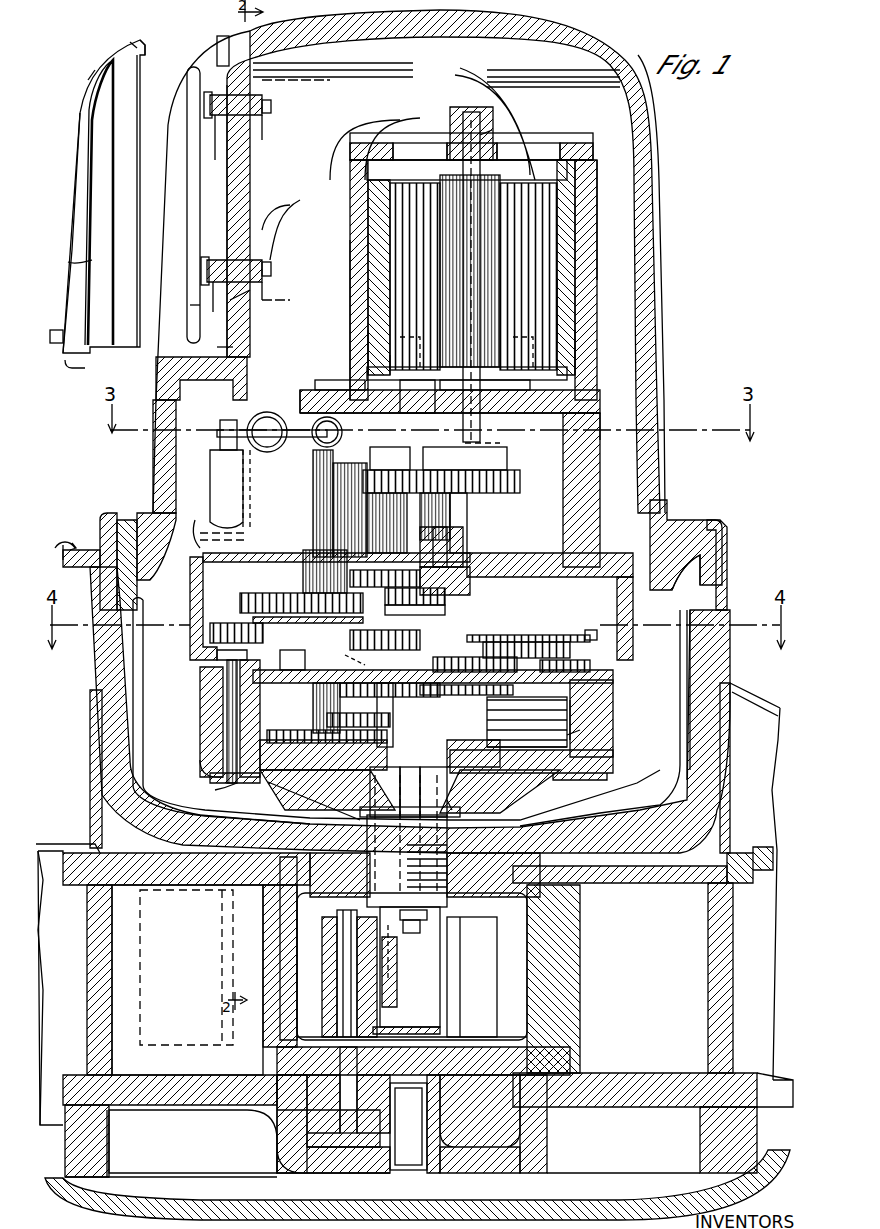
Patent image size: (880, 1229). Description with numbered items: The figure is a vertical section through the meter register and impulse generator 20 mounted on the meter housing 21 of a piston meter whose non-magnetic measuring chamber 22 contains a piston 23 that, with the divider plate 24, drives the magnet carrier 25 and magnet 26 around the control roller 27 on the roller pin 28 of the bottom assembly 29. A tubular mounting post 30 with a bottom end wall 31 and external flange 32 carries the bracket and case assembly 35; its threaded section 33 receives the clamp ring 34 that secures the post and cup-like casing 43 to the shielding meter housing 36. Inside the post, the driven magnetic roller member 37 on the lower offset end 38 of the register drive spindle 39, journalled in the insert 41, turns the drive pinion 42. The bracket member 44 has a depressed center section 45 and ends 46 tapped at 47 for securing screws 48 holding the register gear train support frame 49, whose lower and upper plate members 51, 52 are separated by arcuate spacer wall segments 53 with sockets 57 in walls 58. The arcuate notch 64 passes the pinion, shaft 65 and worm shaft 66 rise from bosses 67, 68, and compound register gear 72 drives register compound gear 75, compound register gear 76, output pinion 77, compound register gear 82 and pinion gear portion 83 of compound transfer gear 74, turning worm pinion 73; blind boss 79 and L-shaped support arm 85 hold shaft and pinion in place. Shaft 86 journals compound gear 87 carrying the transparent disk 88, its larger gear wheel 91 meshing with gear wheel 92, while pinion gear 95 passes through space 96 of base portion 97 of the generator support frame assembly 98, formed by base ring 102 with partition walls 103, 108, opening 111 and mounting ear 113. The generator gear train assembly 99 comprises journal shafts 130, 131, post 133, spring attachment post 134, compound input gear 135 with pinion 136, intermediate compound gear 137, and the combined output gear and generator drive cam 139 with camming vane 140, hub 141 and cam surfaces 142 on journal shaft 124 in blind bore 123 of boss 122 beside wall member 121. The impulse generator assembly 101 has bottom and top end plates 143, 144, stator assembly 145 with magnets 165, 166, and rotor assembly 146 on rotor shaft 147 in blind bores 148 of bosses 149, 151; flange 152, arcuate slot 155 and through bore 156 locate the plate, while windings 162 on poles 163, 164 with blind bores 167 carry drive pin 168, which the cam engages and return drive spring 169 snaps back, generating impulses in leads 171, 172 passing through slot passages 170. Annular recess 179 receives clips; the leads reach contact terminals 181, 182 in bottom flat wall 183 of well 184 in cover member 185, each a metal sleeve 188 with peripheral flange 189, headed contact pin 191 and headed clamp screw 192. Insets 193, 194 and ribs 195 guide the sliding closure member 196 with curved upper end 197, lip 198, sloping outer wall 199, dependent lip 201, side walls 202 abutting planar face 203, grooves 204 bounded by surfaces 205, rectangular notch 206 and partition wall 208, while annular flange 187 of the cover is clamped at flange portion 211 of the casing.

The meter register and impulse generator 20 is at (662, 264).
The meter housing 21 is at (67, 552).
The measuring chamber 22 is at (725, 979).
The piston 23 is at (580, 1024).
The divider plate 24 is at (187, 980).
The magnet carrier 25 is at (482, 974).
The magnet 26 is at (330, 1002).
The control roller 27 is at (300, 1113).
The roller pin 28 is at (405, 1170).
The bottom assembly 29 is at (520, 1169).
The mounting post 30 is at (440, 1030).
The bottom end wall 31 is at (435, 1037).
The external flange 32 is at (520, 809).
The threaded section 33 is at (375, 905).
The clamp ring 34 is at (578, 909).
The bracket and case assembly 35 is at (610, 794).
The meter housing 36 is at (735, 699).
The driven magnetic roller member 37 is at (395, 989).
The lower offset end 38 is at (393, 1009).
The register drive spindle 39 is at (407, 935).
The insert 41 is at (410, 921).
The drive pinion 42 is at (440, 780).
The cup-like casing 43 is at (700, 672).
The bracket member 44 is at (310, 816).
The depressed center section 45 is at (340, 805).
The ends 46 is at (210, 782).
The tapped apertures 47 is at (211, 793).
The securing screws 48 is at (223, 719).
The register gear train support frame 49 is at (613, 724).
The lower plate member 51 is at (205, 764).
The upper plate member 52 is at (205, 664).
The arcuate spacer wall segments 53 is at (205, 694).
The slot-like sockets 57 is at (378, 799).
The opposing walls 58 is at (463, 800).
The arcuate notch 64 is at (372, 789).
The shaft 65 is at (327, 790).
The worm shaft 66 is at (525, 782).
The hollow boss 67 is at (375, 719).
The hollow boss 68 is at (435, 704).
The compound register gear 72 is at (283, 732).
The register output worm pinion 73 is at (580, 734).
The compound transfer gear 74 is at (586, 629).
The register compound gear 75 is at (330, 684).
The compound register gear 76 is at (455, 699).
The output pinion 77 is at (455, 659).
The dependent blind boss 79 is at (320, 692).
The compound register gear 82 is at (572, 664).
The pinion gear portion 83 is at (530, 639).
The L-shaped support arm 85 is at (495, 719).
The shaft 86 is at (350, 655).
The compound gear 87 is at (475, 636).
The transparent disk 88 is at (282, 632).
The larger gear wheel 91 is at (352, 642).
The larger gear wheel 92 is at (575, 638).
The pinion gear 95 is at (420, 603).
The space 96 is at (425, 622).
The base portion 97 is at (212, 531).
The generator support frame assembly 98 is at (585, 509).
The generator gear train assembly 99 is at (280, 544).
The impulse generator assembly 101 is at (350, 294).
The base ring 102 is at (190, 594).
The partition wall 103 is at (272, 612).
The partition wall 108 is at (548, 559).
The through opening 111 is at (190, 610).
The mounting ear 113 is at (200, 634).
The semi-cylindrical wall member 121 is at (588, 436).
The cylindrical boss 122 is at (470, 564).
The blind bore 123 is at (463, 542).
The journal shaft 124 is at (485, 386).
The journal shaft 130 is at (320, 399).
The journal shaft 131 is at (313, 484).
The rectangular post 133 is at (222, 487).
The spring attachment post 134 is at (230, 422).
The compound input gear 135 is at (258, 594).
The pinion gear 136 is at (312, 552).
The intermediate compound gear 137 is at (412, 529).
The combined output gear and generator drive cam 139 is at (515, 474).
The camming vane 140 is at (465, 459).
The dependent hub 141 is at (467, 516).
The cam surfaces 142 is at (390, 459).
The bottom end plate 143 is at (590, 404).
The top end plate 144 is at (585, 147).
The magnetic stator assembly 145 is at (590, 249).
The rotor assembly 146 is at (590, 204).
The rotor shaft 147 is at (495, 136).
The blind bores 148 is at (485, 124).
The journal boss 149 is at (501, 447).
The journal boss 151 is at (460, 114).
The flange 152 is at (300, 397).
The arcuate slot 155 is at (340, 381).
The through bore 156 is at (430, 393).
The windings 162 is at (490, 279).
The pole 163 is at (415, 276).
The pole 164 is at (528, 276).
The stator magnet 165 is at (360, 309).
The stator magnet 166 is at (580, 316).
The blind bores 167 is at (368, 342).
The drive pin 168 is at (385, 364).
The return drive spring 169 is at (275, 411).
The slot passages 170 is at (425, 147).
The lead 171 is at (331, 190).
The lead 172 is at (436, 121).
The annular recess 179 is at (392, 140).
The contact terminal 181 is at (272, 270).
The contact terminal 182 is at (270, 117).
The bottom flat wall 183 is at (261, 305).
The well 184 is at (225, 59).
The cover member 185 is at (660, 149).
The annular ring-like flange 187 is at (722, 534).
The metal sleeve 188 is at (293, 177).
The peripheral flange 189 is at (215, 221).
The headed contact pin 191 is at (280, 207).
The headed clamp screw 192 is at (207, 107).
The inset 193 is at (232, 42).
The inset 194 is at (175, 355).
The ribs 195 is at (187, 79).
The sliding closure member 196 is at (75, 110).
The curved upper end 197 is at (130, 44).
The lip 198 is at (156, 35).
The sloping outer wall 199 is at (78, 219).
The dependent lip 201 is at (83, 370).
The side walls 202 is at (125, 156).
The upstanding planar face 203 is at (235, 349).
The groove 204 is at (95, 264).
The planar wall surfaces 205 is at (90, 84).
The rectangular notch 206 is at (46, 328).
The partition wall 208 is at (190, 309).
The annular flange portion 211 is at (722, 621).